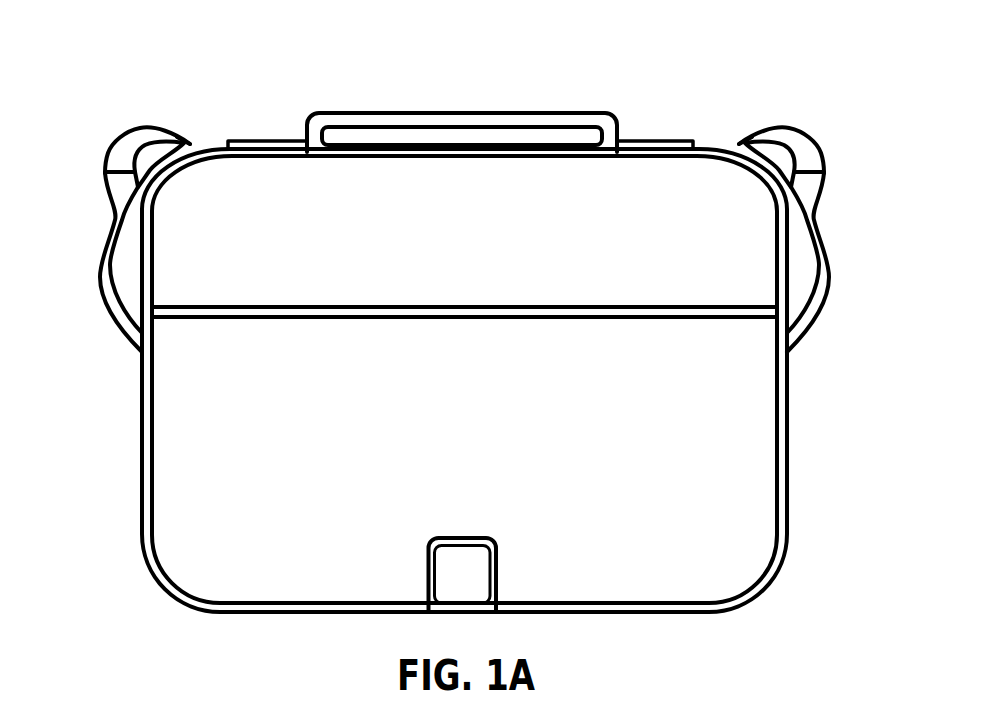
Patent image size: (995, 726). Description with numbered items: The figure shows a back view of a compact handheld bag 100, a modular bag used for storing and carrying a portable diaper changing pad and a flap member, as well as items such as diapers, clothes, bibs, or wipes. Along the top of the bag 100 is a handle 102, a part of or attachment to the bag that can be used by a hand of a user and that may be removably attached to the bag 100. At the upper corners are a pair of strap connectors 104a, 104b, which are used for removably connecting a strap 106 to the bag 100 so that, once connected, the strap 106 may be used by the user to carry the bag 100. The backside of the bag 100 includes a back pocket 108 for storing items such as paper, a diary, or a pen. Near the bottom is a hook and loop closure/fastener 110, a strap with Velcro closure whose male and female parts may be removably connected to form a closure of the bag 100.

The compact handheld bag 100 is at (604, 76).
The handle 102 is at (347, 122).
The strap connector 104a is at (172, 143).
The strap connector 104b is at (757, 143).
The strap 106 is at (105, 160).
The back pocket 108 is at (738, 480).
The hook and loop closure/fastener 110 is at (453, 564).